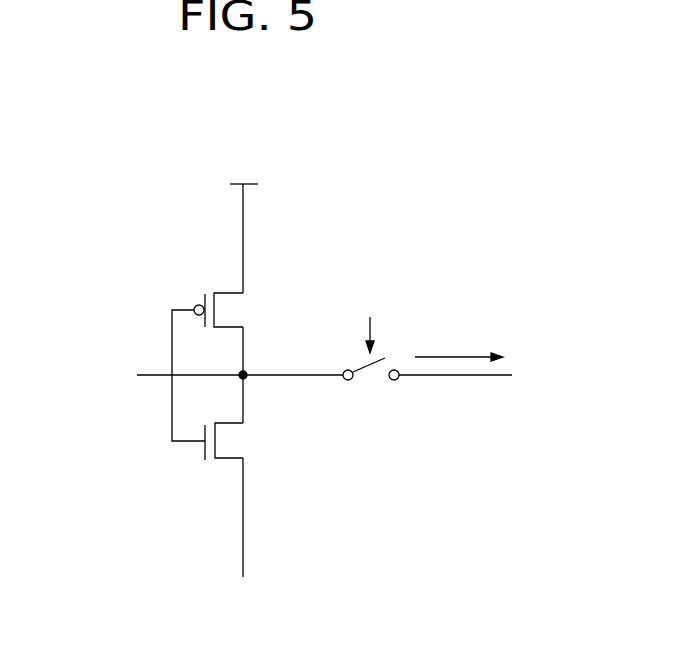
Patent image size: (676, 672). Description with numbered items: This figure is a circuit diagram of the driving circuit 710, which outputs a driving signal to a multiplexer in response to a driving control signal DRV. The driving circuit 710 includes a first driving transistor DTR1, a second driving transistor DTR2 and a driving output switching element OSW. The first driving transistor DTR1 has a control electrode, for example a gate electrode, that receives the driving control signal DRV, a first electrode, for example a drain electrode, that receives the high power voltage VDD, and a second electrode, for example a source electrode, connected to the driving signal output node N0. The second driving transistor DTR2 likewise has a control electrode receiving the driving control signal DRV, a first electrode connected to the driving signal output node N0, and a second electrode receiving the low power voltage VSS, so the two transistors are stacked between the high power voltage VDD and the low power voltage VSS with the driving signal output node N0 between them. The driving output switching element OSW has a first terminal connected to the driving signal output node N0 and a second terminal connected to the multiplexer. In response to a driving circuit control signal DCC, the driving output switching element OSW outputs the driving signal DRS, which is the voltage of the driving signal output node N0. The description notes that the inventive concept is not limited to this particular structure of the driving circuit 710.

The driving circuit 710 is at (460, 130).
The high power voltage VDD is at (244, 223).
The low power voltage VSS is at (244, 542).
The first driving transistor DTR1 is at (247, 310).
The second driving transistor DTR2 is at (255, 441).
The driving signal output node N0 is at (257, 375).
The driving control signal DRV is at (167, 375).
The driving output switching element OSW is at (377, 384).
The driving circuit control signal DCC is at (370, 320).
The driving signal DRS is at (459, 343).